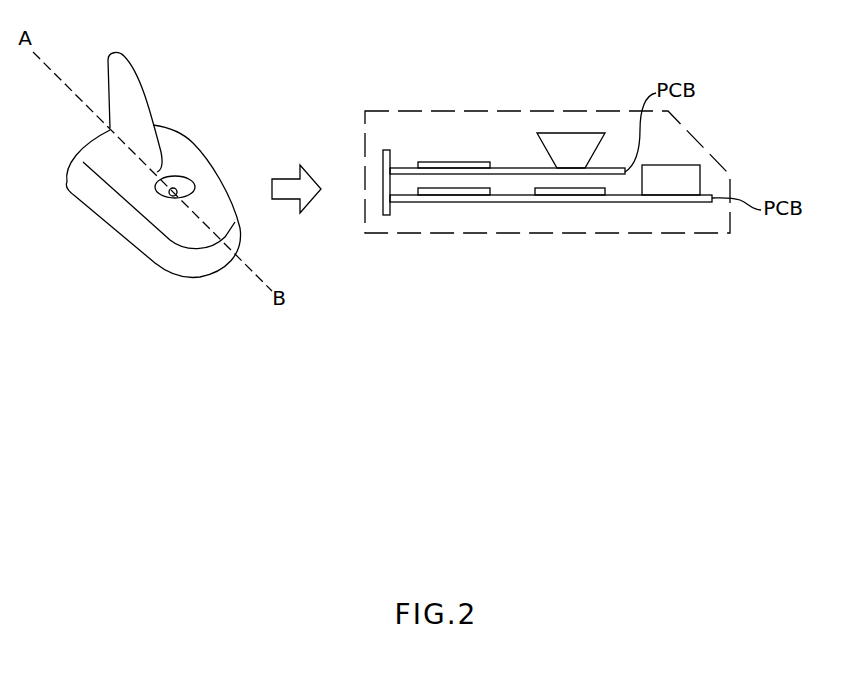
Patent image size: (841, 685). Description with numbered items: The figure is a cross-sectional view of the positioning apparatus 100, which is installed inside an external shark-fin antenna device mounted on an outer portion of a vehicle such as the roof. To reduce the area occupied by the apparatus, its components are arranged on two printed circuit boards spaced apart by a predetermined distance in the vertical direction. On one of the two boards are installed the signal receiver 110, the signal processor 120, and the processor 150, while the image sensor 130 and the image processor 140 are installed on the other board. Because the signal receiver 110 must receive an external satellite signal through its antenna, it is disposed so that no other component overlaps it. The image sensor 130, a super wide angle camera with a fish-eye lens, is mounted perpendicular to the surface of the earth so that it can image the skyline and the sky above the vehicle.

The housing / body of the device 100 is at (197, 150).
The signal receiver 110 is at (673, 202).
The signal processor 120 is at (569, 202).
The image sensor 130 is at (183, 185).
The image processor 140 is at (450, 162).
The processor 150 is at (450, 202).